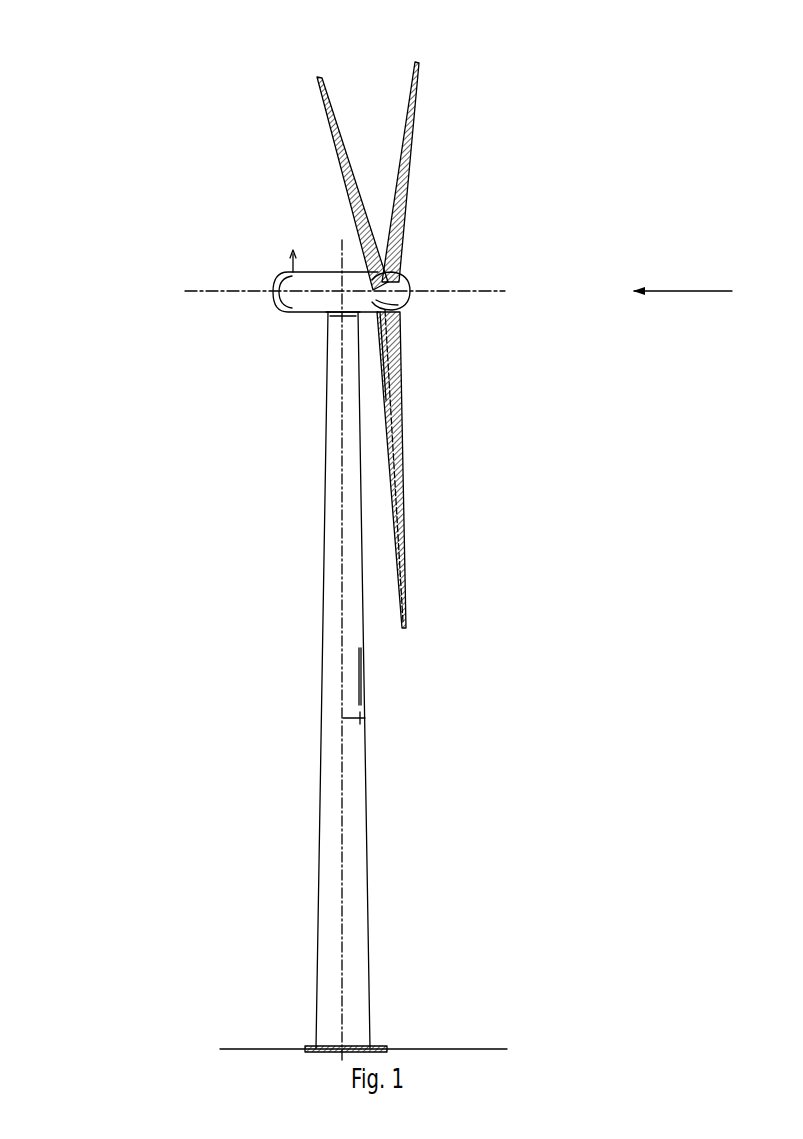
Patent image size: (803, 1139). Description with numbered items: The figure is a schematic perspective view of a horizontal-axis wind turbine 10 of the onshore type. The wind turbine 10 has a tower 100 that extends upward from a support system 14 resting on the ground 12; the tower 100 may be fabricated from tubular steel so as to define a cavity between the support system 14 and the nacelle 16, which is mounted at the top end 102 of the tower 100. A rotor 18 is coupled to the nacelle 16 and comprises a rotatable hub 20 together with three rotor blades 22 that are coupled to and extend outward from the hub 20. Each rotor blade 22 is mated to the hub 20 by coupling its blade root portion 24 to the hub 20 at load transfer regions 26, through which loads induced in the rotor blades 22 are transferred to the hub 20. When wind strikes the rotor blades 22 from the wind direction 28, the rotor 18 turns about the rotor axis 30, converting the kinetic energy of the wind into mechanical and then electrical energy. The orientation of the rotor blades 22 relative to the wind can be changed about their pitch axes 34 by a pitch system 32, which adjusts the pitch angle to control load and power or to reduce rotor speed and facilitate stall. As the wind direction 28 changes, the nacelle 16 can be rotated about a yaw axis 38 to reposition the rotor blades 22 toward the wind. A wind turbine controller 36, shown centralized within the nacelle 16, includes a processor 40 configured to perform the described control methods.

The wind turbine 10 is at (108, 86).
The ground 12 is at (243, 1047).
The support system 14 is at (307, 1046).
The nacelle 16 is at (300, 314).
The rotor 18 is at (420, 198).
The rotatable hub 20 is at (407, 286).
The rotor blade 22 is at (340, 143).
The blade root portion 24 is at (397, 395).
The load transfer regions 26 is at (400, 308).
The wind direction 28 is at (700, 290).
The rotor axis 30 is at (470, 293).
The pitch system 32 is at (390, 345).
The pitch axes 34 is at (318, 78).
The wind turbine controller 36 is at (338, 345).
The yaw axis 38 is at (372, 718).
The processor 40 is at (352, 240).
The tower 100 is at (334, 655).
The top end 102 is at (327, 314).